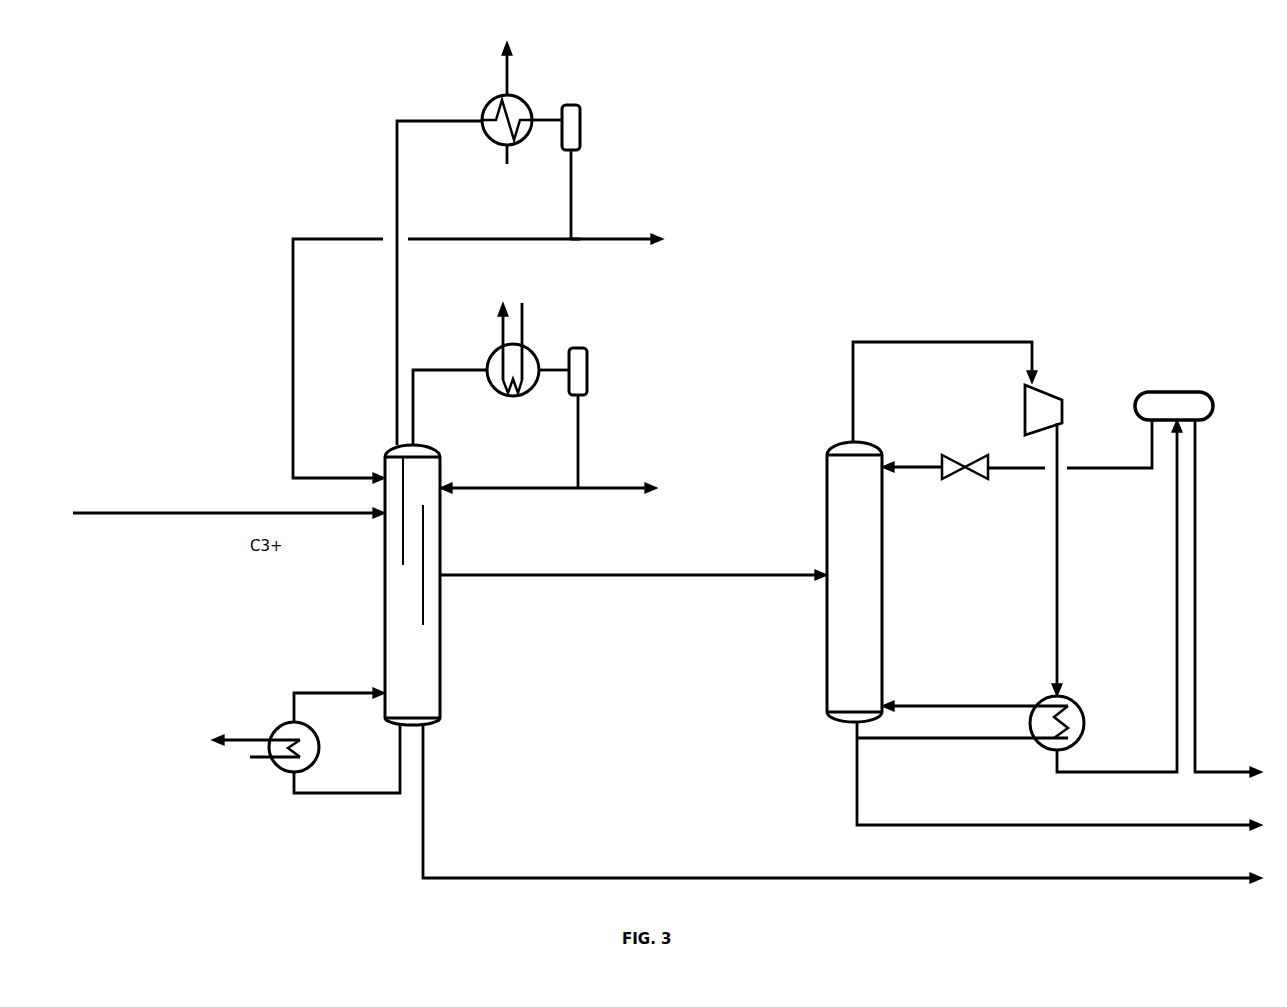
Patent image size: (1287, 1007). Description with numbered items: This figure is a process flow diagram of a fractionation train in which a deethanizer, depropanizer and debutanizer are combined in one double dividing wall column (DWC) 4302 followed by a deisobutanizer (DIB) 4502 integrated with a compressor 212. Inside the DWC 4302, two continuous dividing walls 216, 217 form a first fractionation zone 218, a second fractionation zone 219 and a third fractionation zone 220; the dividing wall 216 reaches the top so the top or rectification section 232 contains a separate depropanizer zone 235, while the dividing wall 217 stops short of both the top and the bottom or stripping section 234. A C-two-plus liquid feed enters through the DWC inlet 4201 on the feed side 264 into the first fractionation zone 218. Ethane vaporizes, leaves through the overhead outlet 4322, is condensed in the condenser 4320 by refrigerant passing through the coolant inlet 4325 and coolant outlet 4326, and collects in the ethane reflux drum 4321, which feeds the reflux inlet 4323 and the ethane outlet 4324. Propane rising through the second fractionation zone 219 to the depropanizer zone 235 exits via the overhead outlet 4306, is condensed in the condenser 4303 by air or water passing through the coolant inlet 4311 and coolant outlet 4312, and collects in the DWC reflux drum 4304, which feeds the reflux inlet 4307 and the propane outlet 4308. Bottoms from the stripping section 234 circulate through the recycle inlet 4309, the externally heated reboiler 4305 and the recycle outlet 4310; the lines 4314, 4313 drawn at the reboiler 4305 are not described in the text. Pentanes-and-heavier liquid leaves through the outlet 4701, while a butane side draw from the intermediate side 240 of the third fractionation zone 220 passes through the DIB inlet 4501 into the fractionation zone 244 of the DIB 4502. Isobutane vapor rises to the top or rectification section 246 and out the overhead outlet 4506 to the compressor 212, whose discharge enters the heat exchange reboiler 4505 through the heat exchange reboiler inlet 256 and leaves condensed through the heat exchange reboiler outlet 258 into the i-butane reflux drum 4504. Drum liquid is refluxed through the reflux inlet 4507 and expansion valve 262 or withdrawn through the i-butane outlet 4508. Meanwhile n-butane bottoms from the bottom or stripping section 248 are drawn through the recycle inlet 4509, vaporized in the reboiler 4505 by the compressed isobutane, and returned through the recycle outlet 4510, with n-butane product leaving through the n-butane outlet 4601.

The DWC inlet 4201 is at (143, 512).
The deethanizer/depropanizer/debutanizer dividing wall column 4302 is at (403, 573).
The first fractionation zone 218 is at (397, 512).
The first dividing wall 216 is at (403, 557).
The second fractionation zone 219 is at (418, 555).
The second dividing wall 217 is at (433, 563).
The third fractionation zone 220 is at (435, 587).
The feed side 264 is at (382, 637).
The intermediate side 240 is at (442, 670).
The bottom or stripping section 234 is at (430, 727).
The depropanizer zone 235 is at (422, 450).
The top or rectification section 232 is at (440, 457).
The overhead outlet 4322 is at (423, 117).
The condenser 4320 is at (492, 96).
The coolant outlet 4326 is at (498, 52).
The coolant inlet 4325 is at (503, 157).
The ethane reflux drum 4321 is at (570, 103).
The reflux inlet 4323 is at (510, 233).
The ethane outlet 4324 is at (638, 235).
The overhead outlet 4306 is at (455, 368).
The condenser 4303 is at (490, 350).
The coolant outlet 4312 is at (492, 303).
The coolant inlet 4311 is at (527, 315).
The DWC reflux drum 4304 is at (577, 348).
The reflux inlet 4307 is at (503, 487).
The propane outlet 4308 is at (633, 487).
The DIB inlet 4501 is at (690, 573).
The recycle outlet 4310 is at (315, 693).
The externally heated reboiler 4305 is at (272, 728).
The heating medium outlet stream 4314 is at (232, 738).
The heating medium inlet stream 4313 is at (252, 760).
The recycle inlet 4309 is at (372, 792).
The C5+ outlet 4701 is at (782, 876).
The deisobutanizer 4502 is at (839, 584).
The top or rectification section 246 is at (860, 445).
The fractionation zone 244 is at (857, 575).
The bottom or stripping section 248 is at (838, 725).
The overhead outlet 4506 is at (850, 360).
The compressor 212 is at (1025, 427).
The heat exchange reboiler inlet 256 is at (1058, 570).
The expansion valve 262 is at (980, 475).
The reflux inlet 4507 is at (1150, 450).
The i-butane reflux drum 4504 is at (1180, 390).
The i-butane outlet 4508 is at (1197, 573).
The heat exchange reboiler 4505 is at (1037, 702).
The recycle outlet 4510 is at (963, 702).
The recycle inlet 4509 is at (965, 740).
The heat exchange reboiler outlet 258 is at (1092, 772).
The n-butane outlet 4601 is at (1027, 823).